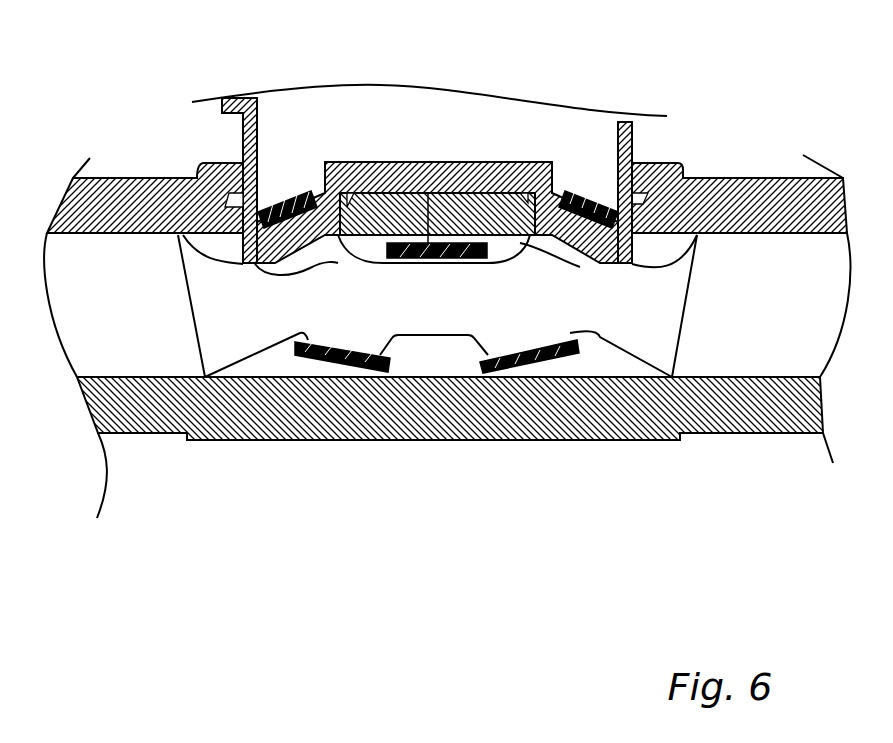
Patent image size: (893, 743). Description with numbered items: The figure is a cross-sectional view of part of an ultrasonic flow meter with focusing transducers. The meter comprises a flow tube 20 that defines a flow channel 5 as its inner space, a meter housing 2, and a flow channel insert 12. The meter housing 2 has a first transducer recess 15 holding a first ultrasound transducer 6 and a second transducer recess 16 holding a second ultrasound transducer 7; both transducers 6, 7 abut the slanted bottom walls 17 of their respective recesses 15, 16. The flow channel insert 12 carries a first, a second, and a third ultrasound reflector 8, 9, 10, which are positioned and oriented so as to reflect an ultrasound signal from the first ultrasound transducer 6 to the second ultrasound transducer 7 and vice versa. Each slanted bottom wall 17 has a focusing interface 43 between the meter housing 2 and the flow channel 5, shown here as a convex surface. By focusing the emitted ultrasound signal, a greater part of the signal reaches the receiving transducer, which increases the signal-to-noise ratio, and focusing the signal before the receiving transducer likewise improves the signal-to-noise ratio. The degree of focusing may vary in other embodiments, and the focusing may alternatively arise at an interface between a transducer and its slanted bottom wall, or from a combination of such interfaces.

The meter housing 2 is at (632, 145).
The flow channel 5 is at (698, 355).
The first ultrasound transducer 6 is at (268, 190).
The second ultrasound transducer 7 is at (600, 190).
The first ultrasound reflector 8 is at (335, 358).
The second ultrasound reflector 9 is at (455, 162).
The third ultrasound reflector 10 is at (532, 362).
The flow channel insert 12 is at (668, 277).
The first transducer recess 15 is at (243, 137).
The second transducer recess 16 is at (643, 157).
The slanted bottom wall 17 is at (286, 252).
The flow tube 20 is at (273, 398).
The focusing interface 43 is at (280, 257).